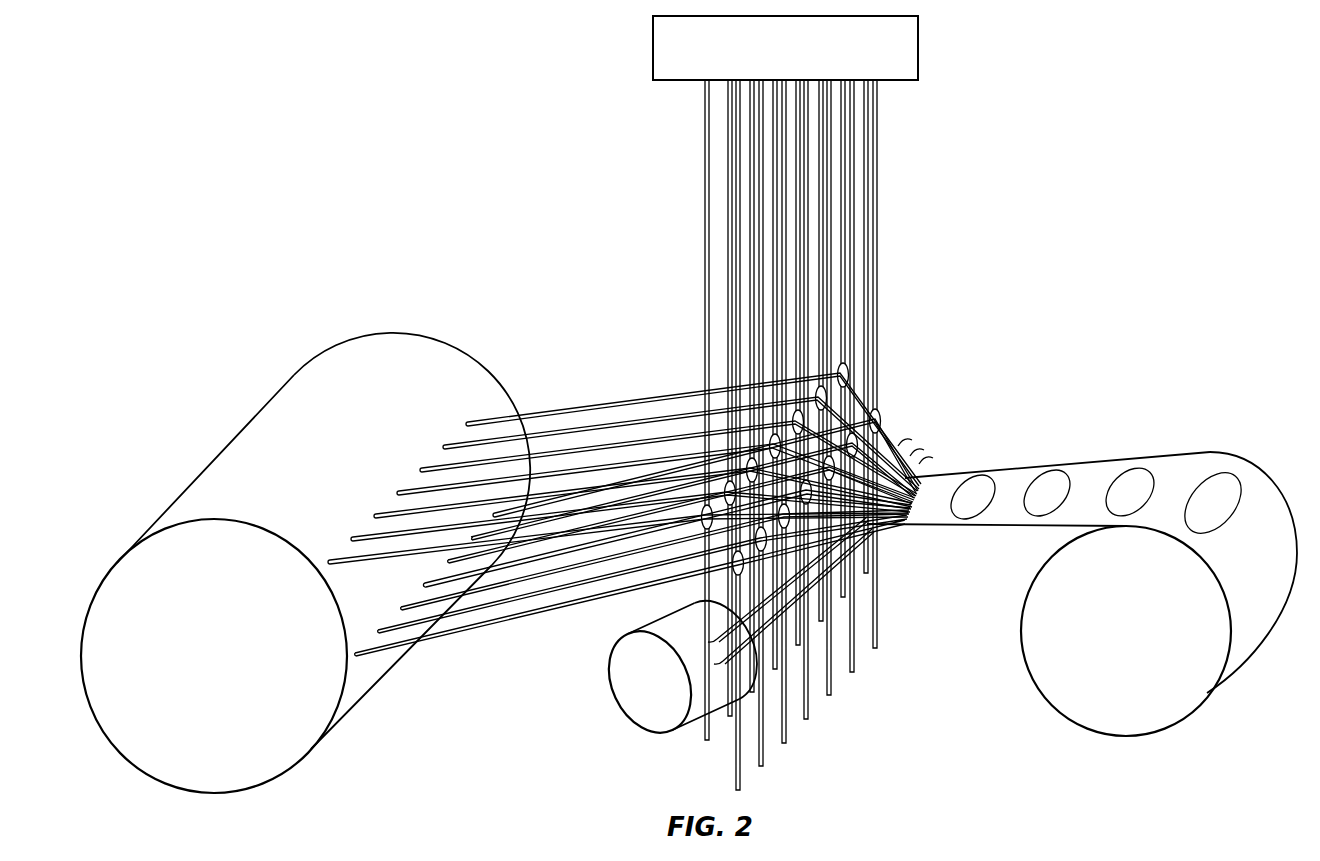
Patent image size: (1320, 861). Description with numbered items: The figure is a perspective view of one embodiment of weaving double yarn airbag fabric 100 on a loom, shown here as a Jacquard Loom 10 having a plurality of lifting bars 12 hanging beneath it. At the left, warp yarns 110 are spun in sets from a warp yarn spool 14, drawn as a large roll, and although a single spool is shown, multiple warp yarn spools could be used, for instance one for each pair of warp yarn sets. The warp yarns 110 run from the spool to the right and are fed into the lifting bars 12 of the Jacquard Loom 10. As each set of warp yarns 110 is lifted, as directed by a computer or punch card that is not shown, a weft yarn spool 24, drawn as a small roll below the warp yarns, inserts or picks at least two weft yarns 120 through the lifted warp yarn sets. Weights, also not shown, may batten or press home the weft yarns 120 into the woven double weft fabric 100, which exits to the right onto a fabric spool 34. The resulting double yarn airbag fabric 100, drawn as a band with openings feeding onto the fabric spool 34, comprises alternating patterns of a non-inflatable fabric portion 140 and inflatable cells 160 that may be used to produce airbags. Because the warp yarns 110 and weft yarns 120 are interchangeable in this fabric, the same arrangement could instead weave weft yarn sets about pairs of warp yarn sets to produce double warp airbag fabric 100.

The Jacquard Loom 10 is at (874, 55).
The lifting bars 12 is at (830, 212).
The warp yarn spool 14 is at (150, 783).
The weft yarn spool 24 is at (625, 710).
The fabric spool 34 is at (1055, 717).
The double yarn airbag fabric 100 is at (1143, 447).
The warp yarns 110 is at (348, 419).
The weft yarns 120 is at (669, 637).
The non-inflatable fabric portion 140 is at (1022, 478).
The inflatable cells 160 is at (979, 488).